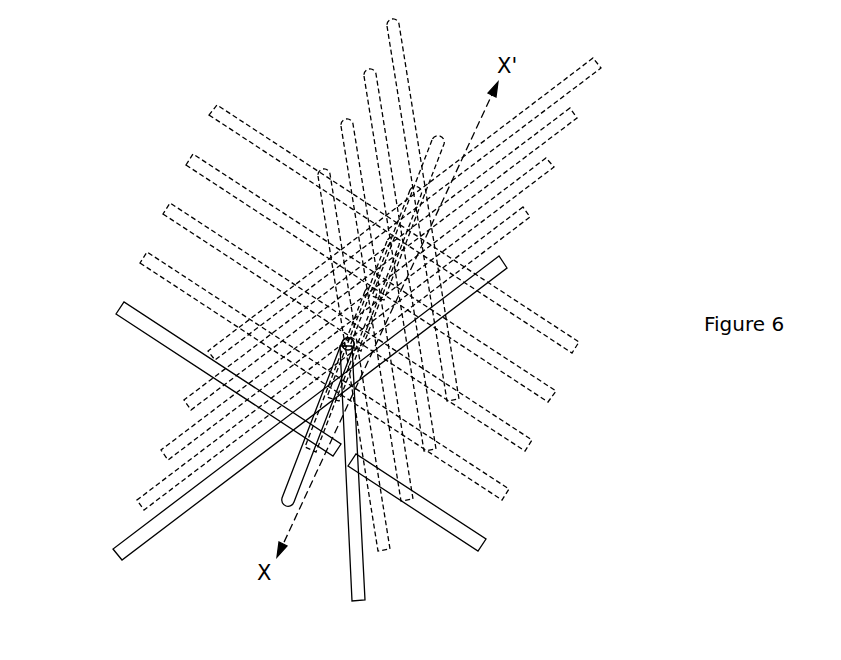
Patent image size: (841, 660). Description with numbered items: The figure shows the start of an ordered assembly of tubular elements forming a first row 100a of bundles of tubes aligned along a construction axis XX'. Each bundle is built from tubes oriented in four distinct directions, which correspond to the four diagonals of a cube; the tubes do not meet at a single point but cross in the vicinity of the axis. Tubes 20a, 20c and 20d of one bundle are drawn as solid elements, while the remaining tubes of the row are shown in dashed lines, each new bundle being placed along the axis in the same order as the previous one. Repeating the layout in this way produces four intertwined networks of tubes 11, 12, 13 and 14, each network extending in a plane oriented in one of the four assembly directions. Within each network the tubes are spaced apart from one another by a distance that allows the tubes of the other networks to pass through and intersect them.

The network of tubes 11 is at (366, 606).
The network of tubes 12 is at (213, 112).
The network of tubes 13 is at (346, 338).
The network of tubes 14 is at (506, 268).
The tube 20a is at (347, 573).
The tube 20c is at (293, 494).
The tube 20d is at (118, 547).
The first row of bundles of tubes 100a is at (286, 456).